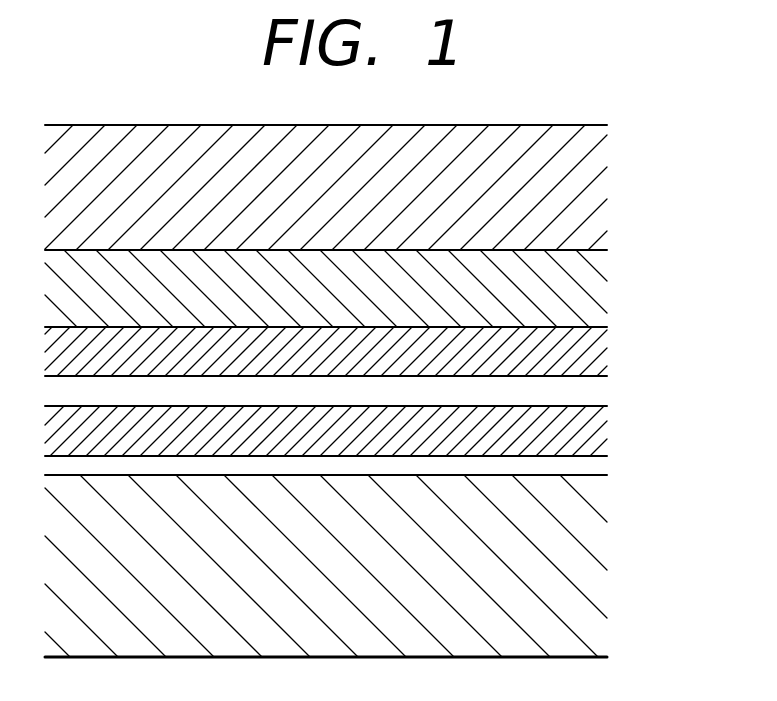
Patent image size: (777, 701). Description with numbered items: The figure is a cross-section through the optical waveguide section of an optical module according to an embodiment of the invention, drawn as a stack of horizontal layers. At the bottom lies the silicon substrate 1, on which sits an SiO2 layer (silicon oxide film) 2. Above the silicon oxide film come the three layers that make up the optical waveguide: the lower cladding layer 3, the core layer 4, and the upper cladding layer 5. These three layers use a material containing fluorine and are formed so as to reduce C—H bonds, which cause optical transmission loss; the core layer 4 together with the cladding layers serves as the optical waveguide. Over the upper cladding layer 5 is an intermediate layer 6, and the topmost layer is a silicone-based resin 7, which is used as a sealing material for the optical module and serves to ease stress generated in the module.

The silicon substrate 1 is at (593, 533).
The SiO2 layer 2 is at (593, 460).
The lower cladding layer 3 is at (593, 428).
The core layer 4 is at (593, 389).
The upper cladding layer 5 is at (593, 354).
The intermediate layer 6 is at (593, 268).
The silicone-based resin 7 is at (593, 161).